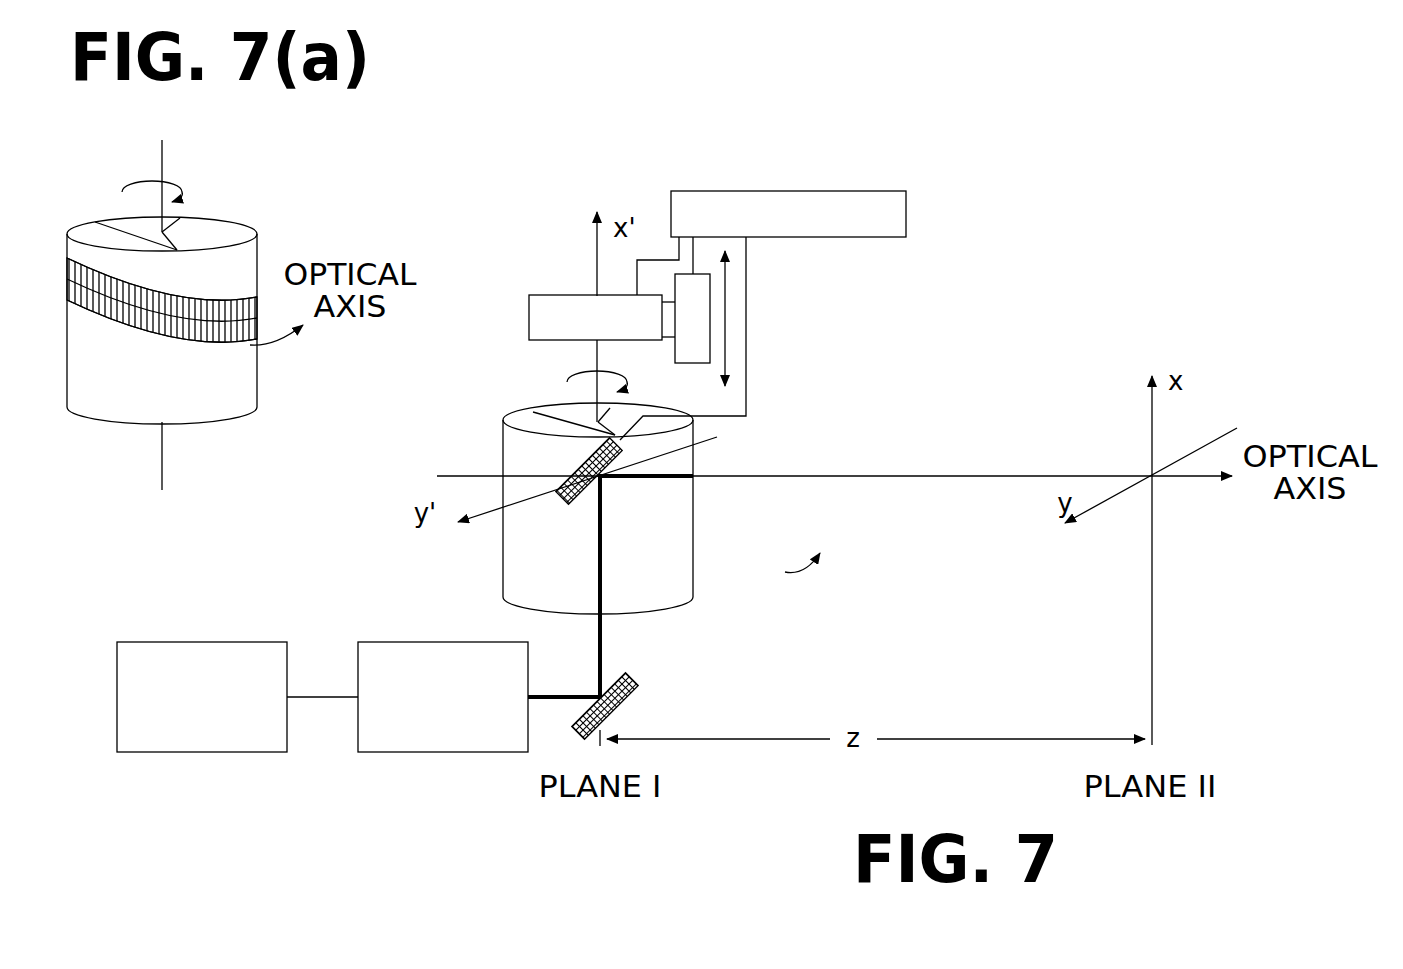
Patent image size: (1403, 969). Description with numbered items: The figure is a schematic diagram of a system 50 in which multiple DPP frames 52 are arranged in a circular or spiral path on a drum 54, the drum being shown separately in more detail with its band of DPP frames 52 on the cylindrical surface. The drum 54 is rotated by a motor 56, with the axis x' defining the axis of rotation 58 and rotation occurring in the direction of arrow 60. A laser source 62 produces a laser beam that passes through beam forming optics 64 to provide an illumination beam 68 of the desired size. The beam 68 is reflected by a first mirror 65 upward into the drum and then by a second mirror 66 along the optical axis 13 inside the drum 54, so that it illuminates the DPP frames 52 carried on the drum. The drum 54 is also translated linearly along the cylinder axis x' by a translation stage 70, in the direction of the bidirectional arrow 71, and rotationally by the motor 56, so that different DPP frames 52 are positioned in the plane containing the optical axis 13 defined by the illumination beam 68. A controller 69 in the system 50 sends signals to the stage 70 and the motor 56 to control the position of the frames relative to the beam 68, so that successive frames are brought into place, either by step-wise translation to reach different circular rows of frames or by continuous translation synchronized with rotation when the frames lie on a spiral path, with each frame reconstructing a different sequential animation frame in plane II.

In FIG. 7, the optical axis 13 is at (945, 478).
In FIG. 7, the system 50 is at (780, 155).
The DPP frames 52 is at (93, 320).
The drum 54 is at (227, 418).
In FIG. 7, the drum 54 is at (693, 550).
In FIG. 7, the motor 56 is at (543, 295).
The axis of rotation 58 is at (162, 166).
In FIG. 7, the axis of rotation 58 is at (600, 372).
The arrow 60 is at (122, 192).
In FIG. 7, the arrow 60 is at (567, 384).
In FIG. 7, the laser source 62 is at (202, 752).
In FIG. 7, the beam forming optics 64 is at (442, 752).
In FIG. 7, the mirror 65 is at (623, 703).
In FIG. 7, the mirror 66 is at (585, 462).
In FIG. 7, the illumination beam 68 is at (643, 480).
In FIG. 7, the controller 69 is at (906, 210).
In FIG. 7, the translation stage 70 is at (706, 334).
In FIG. 7, the bidirectional arrow 71 is at (746, 306).